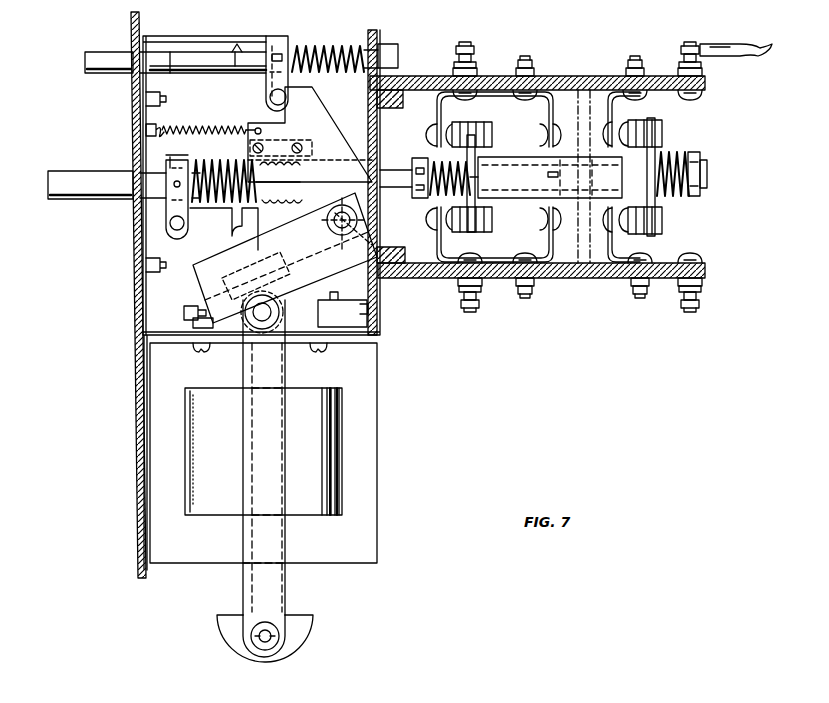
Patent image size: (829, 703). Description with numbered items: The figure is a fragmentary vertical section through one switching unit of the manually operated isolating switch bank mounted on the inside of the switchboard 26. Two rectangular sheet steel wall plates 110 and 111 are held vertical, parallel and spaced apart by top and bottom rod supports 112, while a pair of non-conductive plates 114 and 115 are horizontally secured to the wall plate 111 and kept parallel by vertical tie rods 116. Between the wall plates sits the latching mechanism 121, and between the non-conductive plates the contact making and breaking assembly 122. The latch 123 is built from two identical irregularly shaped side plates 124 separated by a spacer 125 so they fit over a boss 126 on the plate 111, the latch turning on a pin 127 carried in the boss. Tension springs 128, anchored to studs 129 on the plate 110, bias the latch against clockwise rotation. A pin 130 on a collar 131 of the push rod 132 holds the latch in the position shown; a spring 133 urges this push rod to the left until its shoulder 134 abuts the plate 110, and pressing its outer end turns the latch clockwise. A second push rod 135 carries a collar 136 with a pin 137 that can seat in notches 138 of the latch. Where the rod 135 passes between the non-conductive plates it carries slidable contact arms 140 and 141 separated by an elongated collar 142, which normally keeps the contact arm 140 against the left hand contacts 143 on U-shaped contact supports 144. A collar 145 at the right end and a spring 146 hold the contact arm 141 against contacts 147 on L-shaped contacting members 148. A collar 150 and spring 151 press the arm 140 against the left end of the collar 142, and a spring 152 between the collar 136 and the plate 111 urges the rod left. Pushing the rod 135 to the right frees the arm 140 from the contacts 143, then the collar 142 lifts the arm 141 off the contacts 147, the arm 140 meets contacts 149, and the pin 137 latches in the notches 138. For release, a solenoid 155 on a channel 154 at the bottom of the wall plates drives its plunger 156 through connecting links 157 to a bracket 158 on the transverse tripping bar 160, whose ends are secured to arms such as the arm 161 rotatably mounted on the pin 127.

The switchboard 26 is at (114, 107).
The wall plate 110 is at (140, 36).
The wall plate 111 is at (377, 32).
The rod support 112 is at (160, 110).
The non-conductive plate 114 is at (552, 76).
The non-conductive plate 115 is at (556, 290).
The tie rod 116 is at (598, 76).
The latching mechanism 121 is at (239, 26).
The contact making and breaking assembly 122 is at (572, 56).
The latch 123 is at (326, 86).
The side plate 124 is at (320, 128).
The spacer 125 is at (311, 143).
The boss 126 is at (346, 250).
The pin 127 is at (334, 228).
The tension spring 128 is at (244, 126).
The stud 129 is at (162, 130).
The pin 130 is at (270, 95).
The collar 131 is at (279, 36).
The push rod 132 is at (102, 56).
The spring 133 is at (330, 44).
The shoulder 134 is at (143, 42).
The push rod 135 is at (82, 202).
The collar 136 is at (185, 160).
The pin 137 is at (177, 230).
The notch 138 is at (240, 230).
The contact arm 140 is at (478, 152).
The contact arm 141 is at (660, 152).
The elongated collar 142 is at (526, 198).
The contact 143 is at (444, 128).
The U-shaped contact support 144 is at (488, 76).
The collar 145 is at (704, 193).
The spring 146 is at (684, 194).
The contact 147 is at (620, 128).
The L-shaped contacting member 148 is at (658, 76).
The contact 149 is at (546, 128).
The collar 150 is at (418, 198).
The spring 151 is at (440, 158).
The spring 152 is at (221, 160).
The channel 154 is at (228, 343).
The solenoid 155 is at (373, 452).
The plunger 156 is at (305, 622).
The connecting link 157 is at (242, 540).
The bracket 158 is at (195, 350).
The tripping bar 160 is at (215, 306).
The arm 161 is at (320, 280).